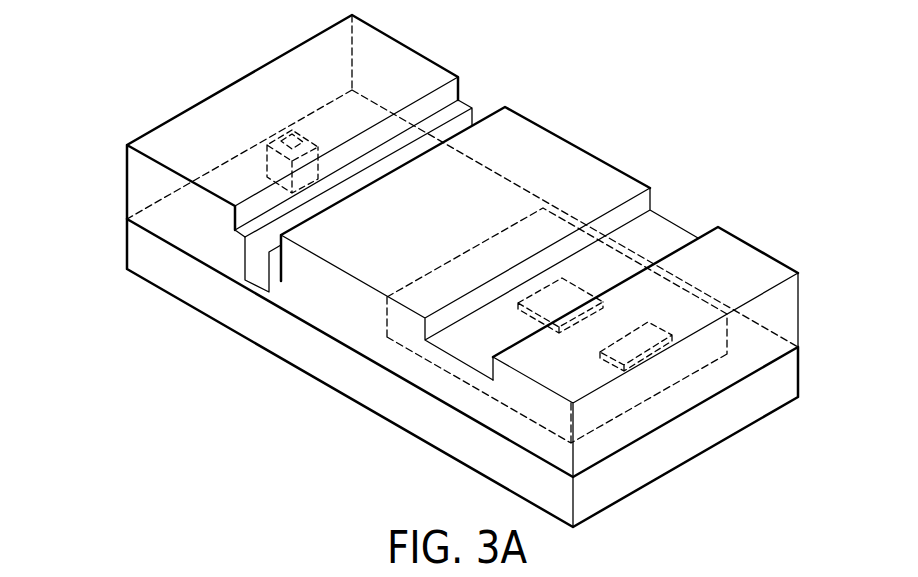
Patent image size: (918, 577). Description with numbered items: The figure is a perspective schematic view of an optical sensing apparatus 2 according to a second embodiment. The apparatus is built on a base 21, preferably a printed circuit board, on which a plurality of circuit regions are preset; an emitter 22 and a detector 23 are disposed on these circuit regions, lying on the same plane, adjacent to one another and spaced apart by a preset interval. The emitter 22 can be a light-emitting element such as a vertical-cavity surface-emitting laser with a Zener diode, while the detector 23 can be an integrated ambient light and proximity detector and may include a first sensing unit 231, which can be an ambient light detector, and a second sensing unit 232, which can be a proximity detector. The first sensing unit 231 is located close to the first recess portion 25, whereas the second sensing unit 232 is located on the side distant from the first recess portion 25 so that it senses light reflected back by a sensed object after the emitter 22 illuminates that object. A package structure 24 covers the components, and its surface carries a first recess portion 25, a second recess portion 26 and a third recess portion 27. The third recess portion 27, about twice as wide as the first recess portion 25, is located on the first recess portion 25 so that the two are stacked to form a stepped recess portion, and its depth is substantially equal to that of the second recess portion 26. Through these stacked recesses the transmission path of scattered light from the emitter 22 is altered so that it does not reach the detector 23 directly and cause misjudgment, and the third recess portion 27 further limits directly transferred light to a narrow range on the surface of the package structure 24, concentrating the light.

The optical sensing apparatus 2 is at (586, 124).
The base 21 is at (680, 442).
The emitter 22 is at (283, 130).
The detector 23 is at (457, 255).
The first sensing unit 231 is at (524, 313).
The second sensing unit 232 is at (610, 342).
The package structure 24 is at (320, 297).
The first recess portion 25 is at (257, 270).
The second recess portion 26 is at (688, 203).
The third recess portion 27 is at (484, 79).